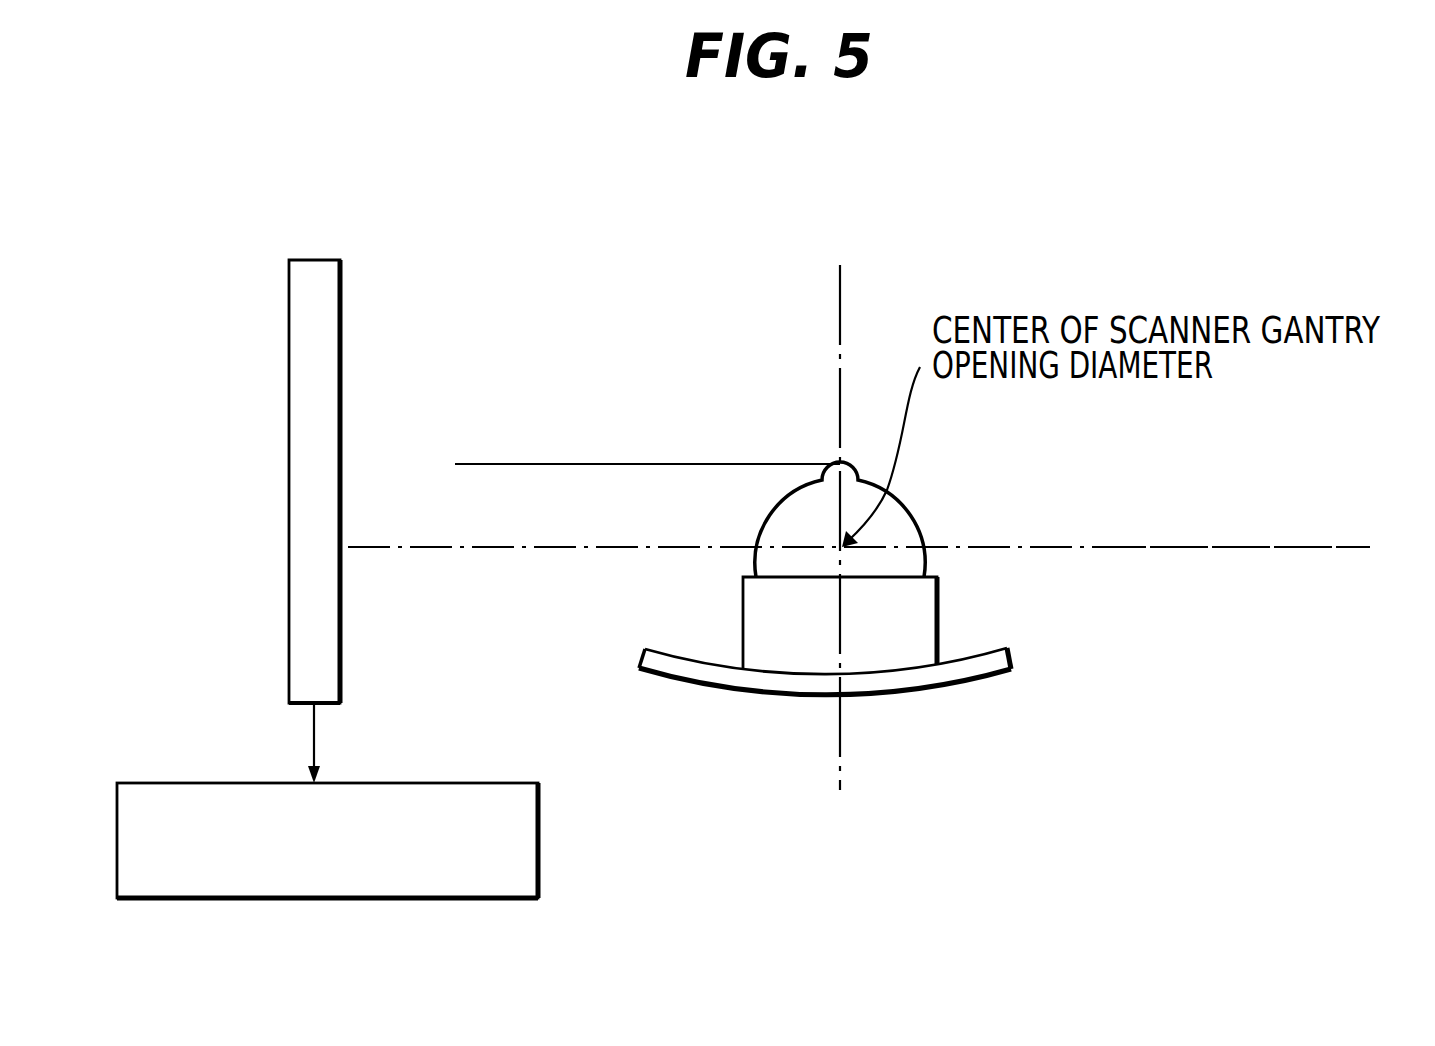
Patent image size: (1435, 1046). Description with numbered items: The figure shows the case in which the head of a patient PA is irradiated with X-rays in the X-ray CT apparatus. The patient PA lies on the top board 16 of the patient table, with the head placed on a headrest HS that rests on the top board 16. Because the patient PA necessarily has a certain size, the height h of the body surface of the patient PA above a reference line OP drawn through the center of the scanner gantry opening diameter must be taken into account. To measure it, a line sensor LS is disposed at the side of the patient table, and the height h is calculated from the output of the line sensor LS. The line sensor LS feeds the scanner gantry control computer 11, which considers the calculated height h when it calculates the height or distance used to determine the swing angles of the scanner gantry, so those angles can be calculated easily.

The scanner gantry control computer 11 is at (152, 783).
The top board 16 is at (1008, 670).
The line sensor LS is at (344, 290).
The patient PA is at (915, 530).
The headrest HS is at (920, 640).
The optical axis / horizontal reference line OP is at (1245, 547).
The height h is at (466, 464).